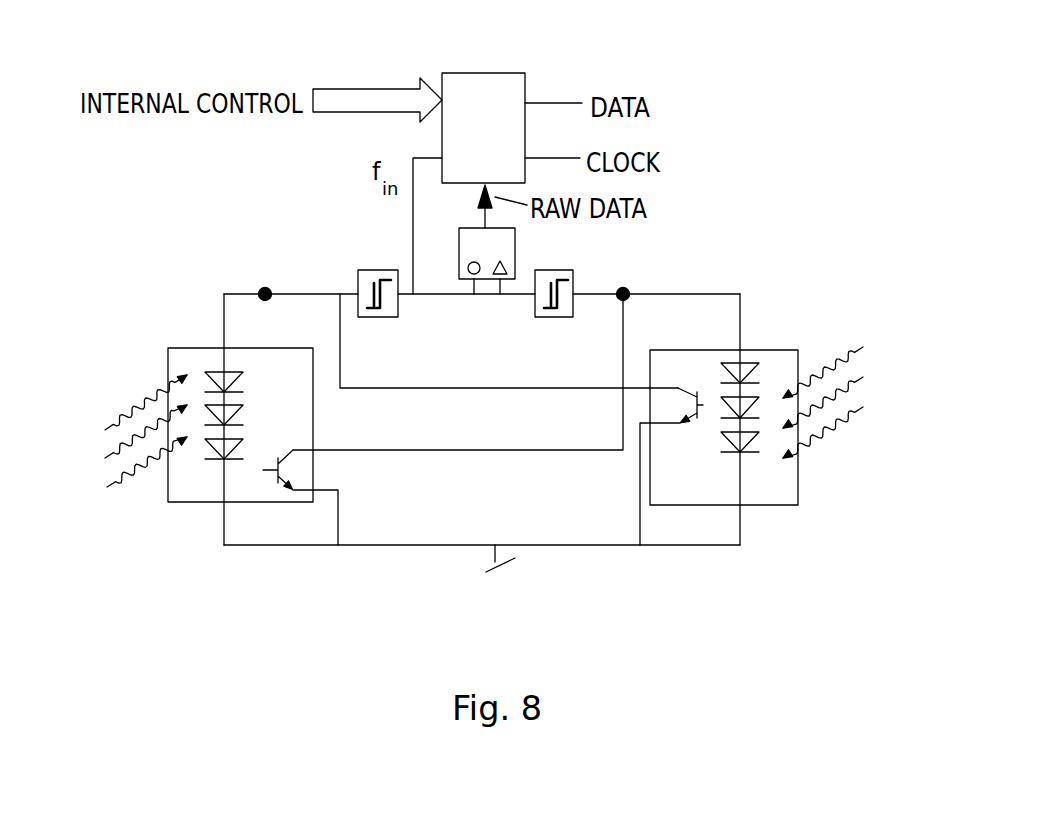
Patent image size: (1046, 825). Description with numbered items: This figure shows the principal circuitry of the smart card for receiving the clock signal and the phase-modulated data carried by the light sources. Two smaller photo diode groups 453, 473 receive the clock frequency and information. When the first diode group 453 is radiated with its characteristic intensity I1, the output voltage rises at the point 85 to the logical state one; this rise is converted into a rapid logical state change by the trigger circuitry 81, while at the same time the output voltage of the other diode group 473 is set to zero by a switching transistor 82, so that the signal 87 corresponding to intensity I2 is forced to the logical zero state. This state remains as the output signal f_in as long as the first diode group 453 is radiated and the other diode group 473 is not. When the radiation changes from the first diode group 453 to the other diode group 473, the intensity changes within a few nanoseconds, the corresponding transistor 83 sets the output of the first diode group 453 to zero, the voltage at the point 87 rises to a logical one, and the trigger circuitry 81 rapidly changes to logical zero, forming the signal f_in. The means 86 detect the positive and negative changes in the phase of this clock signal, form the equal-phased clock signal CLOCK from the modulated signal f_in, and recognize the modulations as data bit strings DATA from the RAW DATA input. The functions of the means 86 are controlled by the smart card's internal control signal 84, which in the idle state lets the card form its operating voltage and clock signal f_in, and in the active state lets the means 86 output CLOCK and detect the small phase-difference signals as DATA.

The means 86 is at (481, 100).
The internal control signal 84 is at (348, 113).
The trigger circuitry 81 is at (375, 270).
The point 85 is at (265, 279).
The signal 87 is at (632, 279).
The first diode group 453 is at (178, 350).
The other diode group 473 is at (780, 340).
The transistor 83 is at (283, 472).
The switching transistor 82 is at (678, 383).